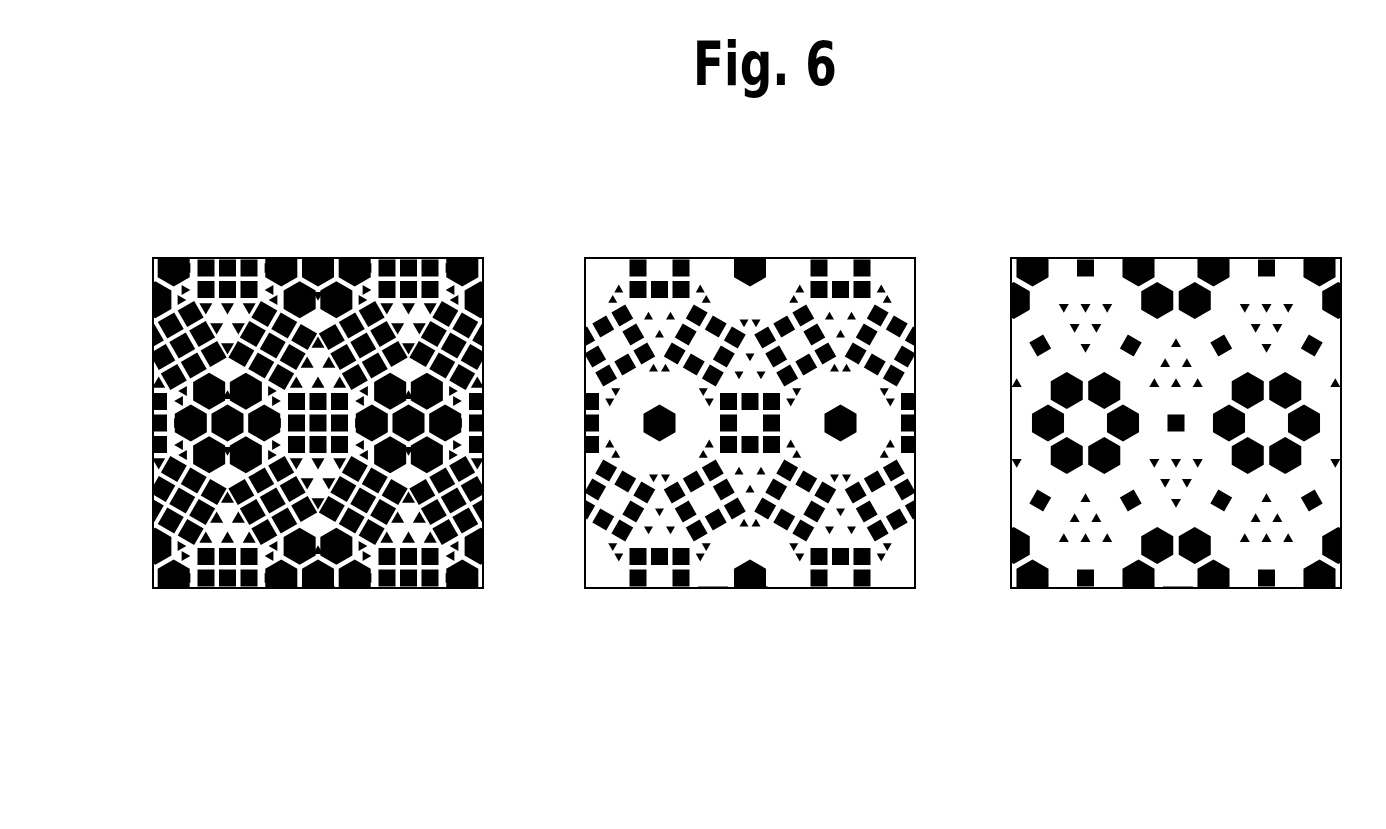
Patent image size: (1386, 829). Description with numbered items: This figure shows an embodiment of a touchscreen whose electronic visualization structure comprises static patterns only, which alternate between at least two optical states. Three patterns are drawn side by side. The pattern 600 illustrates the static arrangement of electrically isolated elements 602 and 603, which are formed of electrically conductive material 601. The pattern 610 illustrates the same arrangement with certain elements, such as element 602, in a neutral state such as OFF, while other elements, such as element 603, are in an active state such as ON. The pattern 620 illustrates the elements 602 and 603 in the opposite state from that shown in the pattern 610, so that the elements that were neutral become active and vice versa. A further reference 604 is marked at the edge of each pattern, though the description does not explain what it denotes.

The pattern 600 is at (341, 191).
The pattern 610 is at (773, 191).
The pattern 620 is at (1199, 191).
The electrically conductive material 601 is at (180, 600).
The electrically isolated element 602 is at (282, 588).
The electrically isolated element 603 is at (320, 588).
The pattern edge region 604 is at (455, 600).